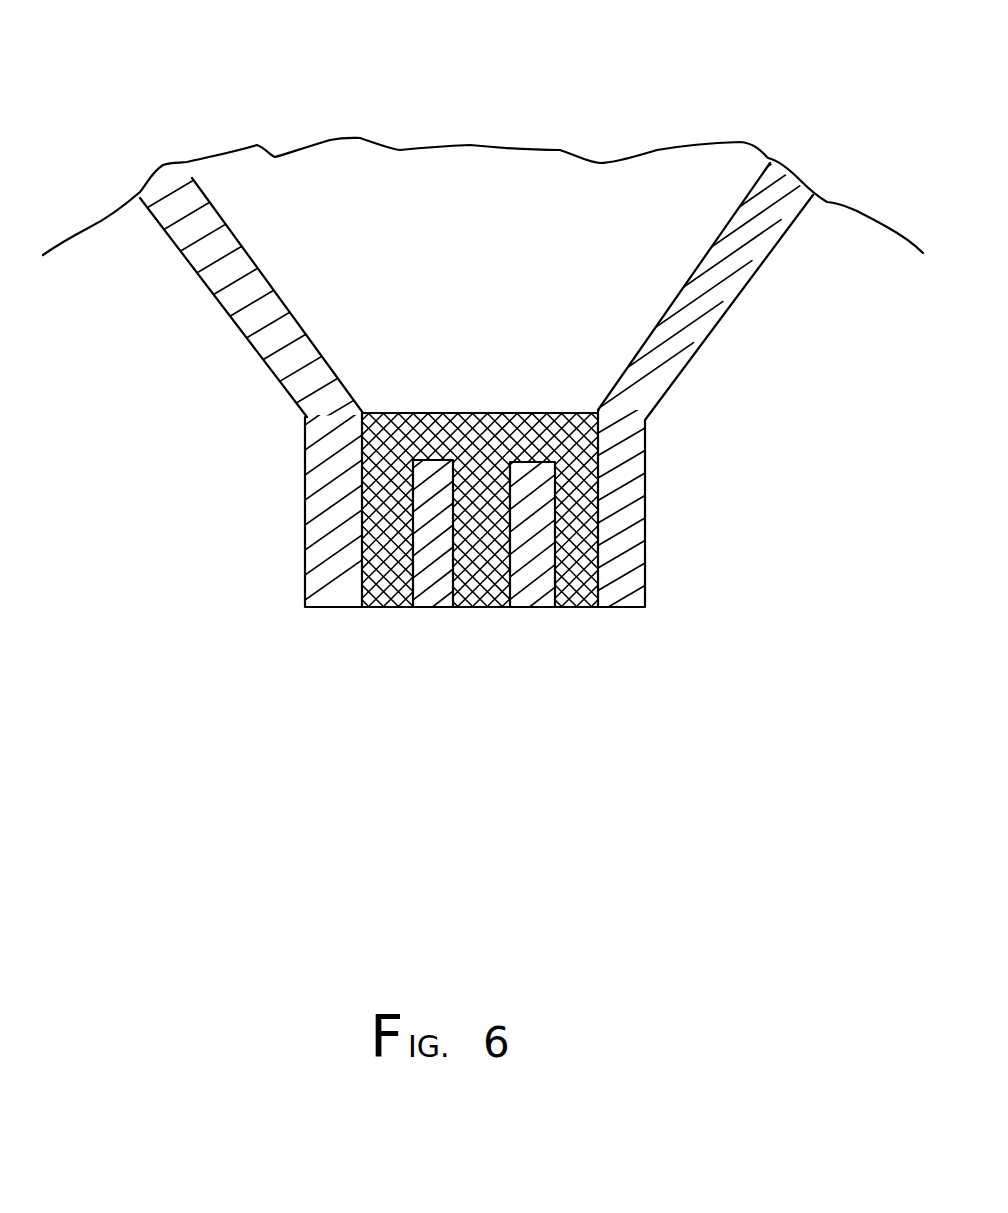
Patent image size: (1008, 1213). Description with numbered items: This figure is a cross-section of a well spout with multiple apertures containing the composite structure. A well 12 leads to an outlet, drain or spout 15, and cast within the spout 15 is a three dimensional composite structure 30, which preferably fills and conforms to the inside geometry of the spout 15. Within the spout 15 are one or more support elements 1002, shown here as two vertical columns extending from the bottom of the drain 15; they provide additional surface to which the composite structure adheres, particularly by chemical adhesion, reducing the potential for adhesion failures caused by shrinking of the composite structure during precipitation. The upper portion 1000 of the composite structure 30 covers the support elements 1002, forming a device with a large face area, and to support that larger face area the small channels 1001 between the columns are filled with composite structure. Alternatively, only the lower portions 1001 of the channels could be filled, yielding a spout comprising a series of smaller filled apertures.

The well 12 is at (703, 195).
The spout 15 is at (623, 510).
The composite structure 30 is at (476, 410).
The upper portion of the composite structure 1000 is at (397, 415).
The channels 1001 is at (375, 610).
The support elements 1002 is at (530, 615).